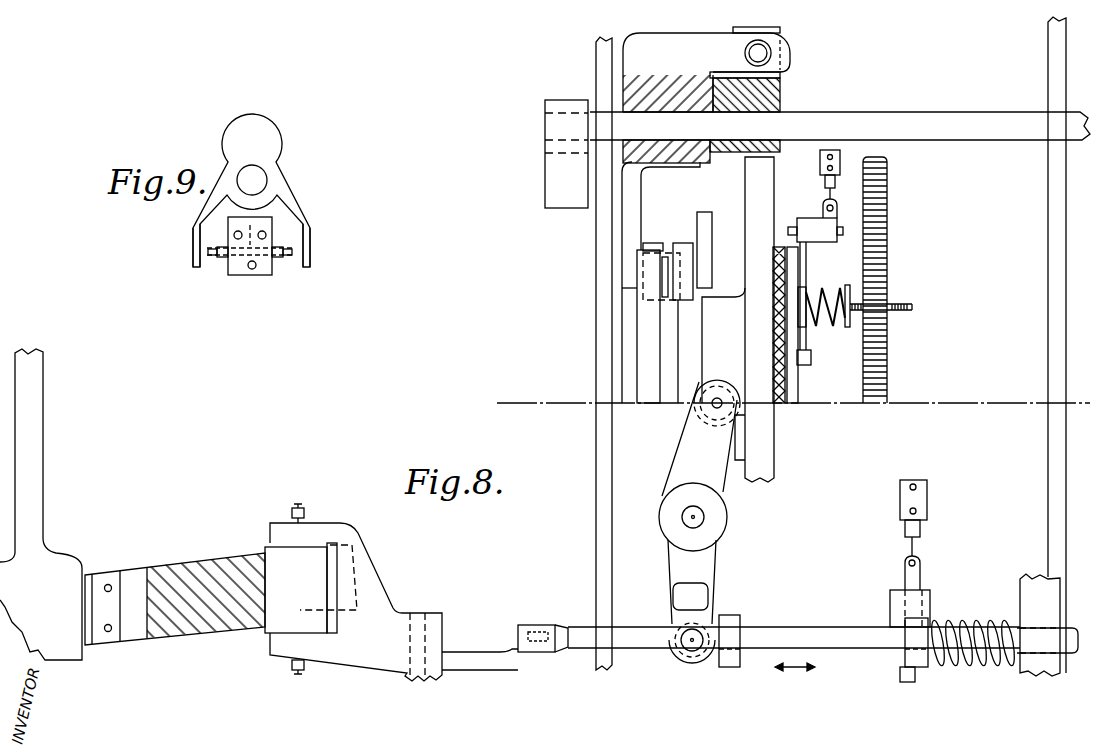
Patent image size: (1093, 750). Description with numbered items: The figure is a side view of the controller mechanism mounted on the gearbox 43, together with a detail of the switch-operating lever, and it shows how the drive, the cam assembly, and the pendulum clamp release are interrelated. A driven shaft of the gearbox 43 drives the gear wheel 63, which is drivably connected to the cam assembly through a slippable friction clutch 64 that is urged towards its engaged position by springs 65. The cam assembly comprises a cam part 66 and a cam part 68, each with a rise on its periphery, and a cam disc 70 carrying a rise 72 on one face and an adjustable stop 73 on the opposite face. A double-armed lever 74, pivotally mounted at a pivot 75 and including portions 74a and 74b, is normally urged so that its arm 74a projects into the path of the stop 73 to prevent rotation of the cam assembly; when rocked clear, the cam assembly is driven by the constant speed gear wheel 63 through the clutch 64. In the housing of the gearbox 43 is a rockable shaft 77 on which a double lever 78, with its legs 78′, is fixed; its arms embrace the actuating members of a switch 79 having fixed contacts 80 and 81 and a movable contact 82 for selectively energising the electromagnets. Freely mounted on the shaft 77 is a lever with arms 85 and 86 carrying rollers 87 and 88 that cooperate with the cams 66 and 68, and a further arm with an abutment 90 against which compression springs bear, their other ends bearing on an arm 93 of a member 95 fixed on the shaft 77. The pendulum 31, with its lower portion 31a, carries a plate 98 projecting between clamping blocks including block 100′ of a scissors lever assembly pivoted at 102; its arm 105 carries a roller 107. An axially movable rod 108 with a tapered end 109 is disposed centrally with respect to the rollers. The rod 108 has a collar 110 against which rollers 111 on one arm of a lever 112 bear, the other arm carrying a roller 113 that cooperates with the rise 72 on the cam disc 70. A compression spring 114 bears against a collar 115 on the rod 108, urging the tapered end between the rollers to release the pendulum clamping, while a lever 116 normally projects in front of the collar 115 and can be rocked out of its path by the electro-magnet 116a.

In FIG. 8, the pendulum 31 is at (40, 463).
In FIG. 8, the arm hub 31a is at (60, 565).
In FIG. 8, the gearbox 43 is at (598, 382).
In FIG. 8, the gear wheel 63 is at (888, 262).
In FIG. 8, the slippable friction clutch 64 is at (778, 381).
In FIG. 8, the springs 65 is at (806, 292).
In FIG. 8, the cam part 66 is at (642, 337).
In FIG. 8, the cam part 68 is at (689, 330).
In FIG. 8, the cam disc 70 is at (770, 209).
In FIG. 8, the rise 72 is at (745, 445).
In FIG. 8, the adjustable stop 73 is at (812, 355).
In FIG. 8, the double-armed lever 74 is at (834, 208).
In FIG. 8, the lever arm 74a is at (803, 272).
In FIG. 8, the lever part 74b is at (820, 160).
In FIG. 8, the pivot 75 is at (840, 231).
In FIG. 8, the rockable shaft 77 is at (937, 125).
In FIG. 9, the rockable shaft 77 is at (262, 166).
In FIG. 8, the double lever 78 is at (556, 181).
In FIG. 9, the double lever 78 is at (283, 193).
In FIG. 9, the yoke leg 78′ is at (311, 248).
In FIG. 9, the switch 79 is at (255, 275).
In FIG. 9, the fixed contact 80 is at (228, 228).
In FIG. 9, the fixed contact 81 is at (268, 228).
In FIG. 9, the movable contact 82 is at (245, 272).
In FIG. 8, the lever arm 85 is at (706, 212).
In FIG. 8, the lever arm 86 is at (628, 227).
In FIG. 8, the roller 87 is at (685, 246).
In FIG. 8, the roller 88 is at (647, 280).
In FIG. 8, the abutment 90 is at (706, 98).
In FIG. 8, the arm 93 is at (790, 45).
In FIG. 8, the member 95 is at (790, 100).
In FIG. 8, the plate 98 is at (183, 572).
In FIG. 8, the block 100′ is at (318, 592).
In FIG. 8, the pivot 102 is at (424, 613).
In FIG. 8, the scissors lever arm 105 is at (494, 656).
In FIG. 8, the roller 107 is at (524, 625).
In FIG. 8, the axially movable rod 108 is at (806, 634).
In FIG. 8, the tapered end 109 is at (562, 625).
In FIG. 8, the collar 110 is at (730, 670).
In FIG. 8, the rollers 111 is at (675, 655).
In FIG. 8, the lever 112 is at (700, 566).
In FIG. 8, the roller 113 is at (725, 371).
In FIG. 8, the compression spring 114 is at (968, 632).
In FIG. 8, the collar 115 is at (905, 658).
In FIG. 8, the lever 116 is at (908, 603).
In FIG. 8, the electro-magnet 116a is at (902, 495).